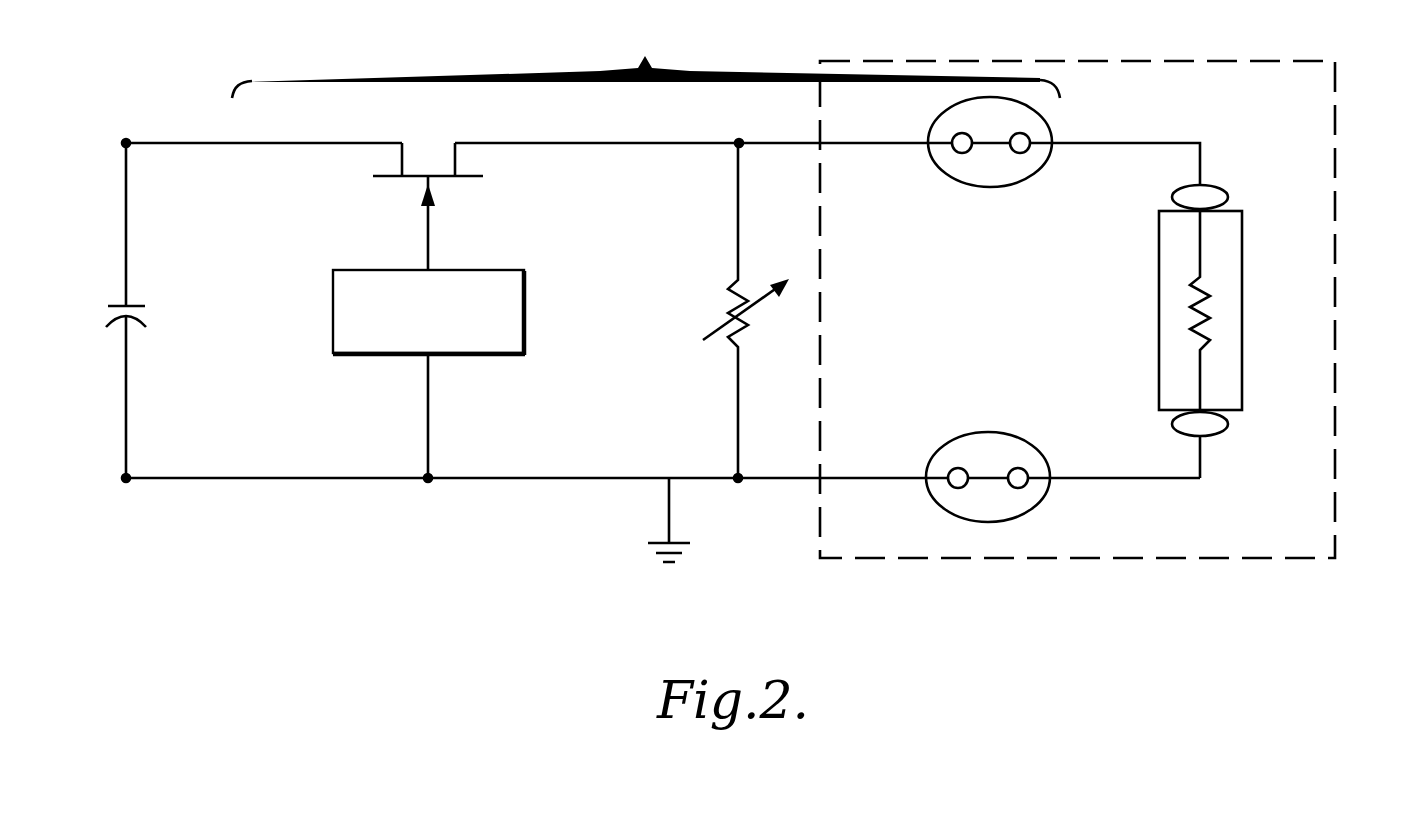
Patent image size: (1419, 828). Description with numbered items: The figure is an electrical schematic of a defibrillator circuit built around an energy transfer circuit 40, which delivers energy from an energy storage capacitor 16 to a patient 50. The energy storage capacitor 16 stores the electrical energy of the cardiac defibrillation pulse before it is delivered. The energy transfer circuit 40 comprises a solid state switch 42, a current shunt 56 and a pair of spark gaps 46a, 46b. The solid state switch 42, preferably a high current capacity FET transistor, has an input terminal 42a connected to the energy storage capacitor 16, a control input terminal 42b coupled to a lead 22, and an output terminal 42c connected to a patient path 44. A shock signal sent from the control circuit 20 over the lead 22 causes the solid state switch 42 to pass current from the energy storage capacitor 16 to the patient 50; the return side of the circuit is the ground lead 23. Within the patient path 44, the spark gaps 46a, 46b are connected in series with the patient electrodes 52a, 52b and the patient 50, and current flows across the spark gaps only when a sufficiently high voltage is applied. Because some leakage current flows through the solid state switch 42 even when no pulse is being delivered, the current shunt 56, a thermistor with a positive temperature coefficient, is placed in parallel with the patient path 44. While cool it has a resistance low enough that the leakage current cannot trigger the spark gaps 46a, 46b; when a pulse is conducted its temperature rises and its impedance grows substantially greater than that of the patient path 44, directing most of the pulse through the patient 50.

The energy storage capacitor 16 is at (121, 306).
The control circuit 20 is at (350, 355).
The lead 22 is at (428, 216).
The ground lead 23 is at (598, 478).
The energy transfer circuit 40 is at (646, 60).
The solid state switch 42 is at (340, 168).
The input terminal 42a is at (335, 143).
The control input terminal 42b is at (440, 176).
The output terminal 42c is at (524, 143).
The patient path 44 is at (1336, 108).
The spark gap 46a is at (985, 188).
The spark gap 46b is at (985, 432).
The patient 50 is at (1159, 305).
The patient electrode 52a is at (1229, 198).
The patient electrode 52b is at (1229, 426).
The current shunt 56 is at (740, 288).